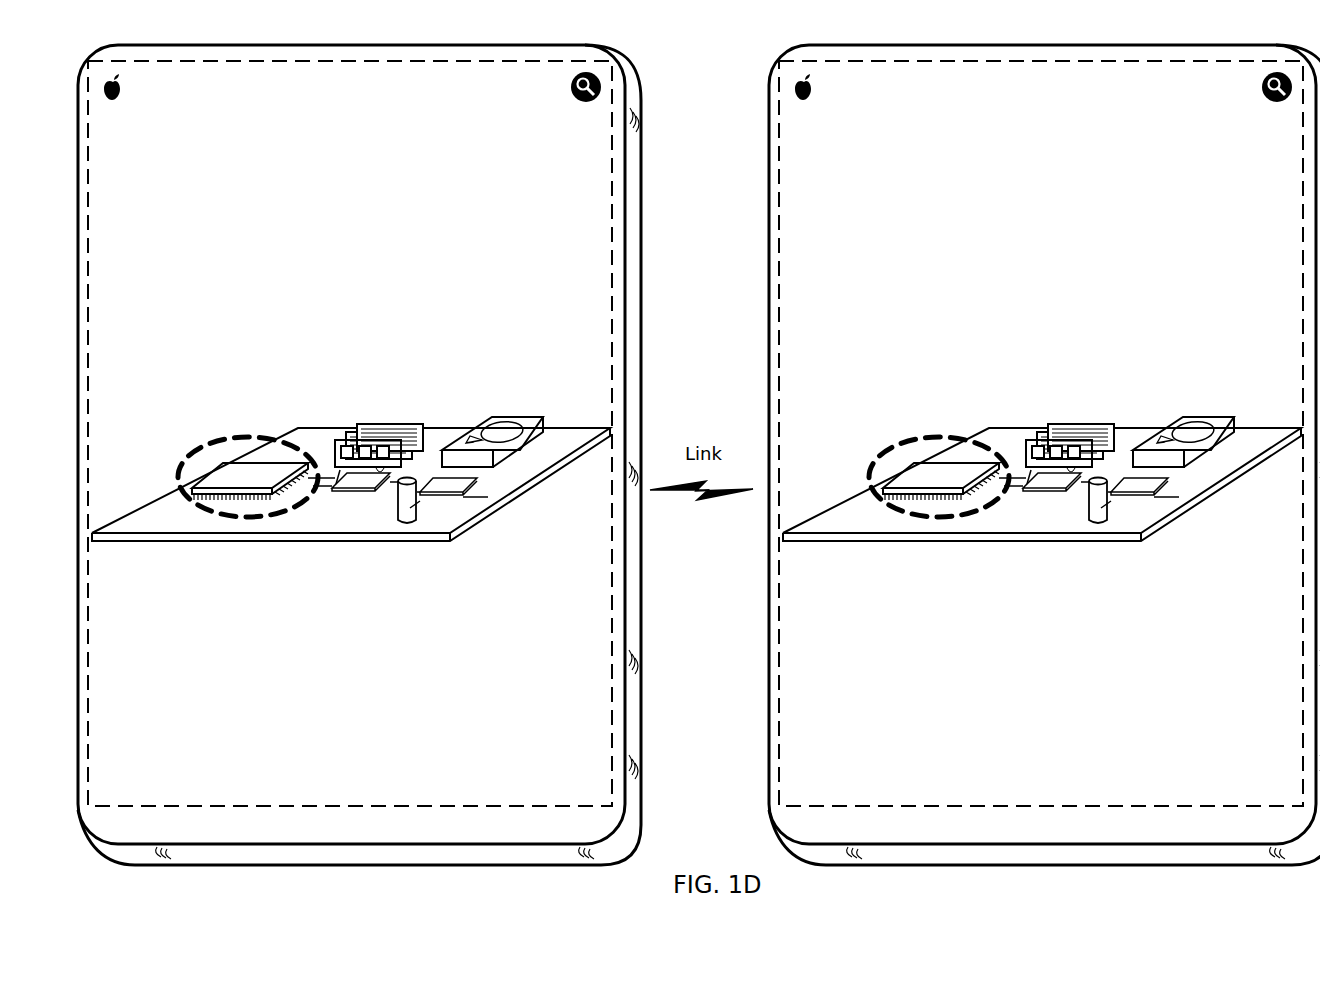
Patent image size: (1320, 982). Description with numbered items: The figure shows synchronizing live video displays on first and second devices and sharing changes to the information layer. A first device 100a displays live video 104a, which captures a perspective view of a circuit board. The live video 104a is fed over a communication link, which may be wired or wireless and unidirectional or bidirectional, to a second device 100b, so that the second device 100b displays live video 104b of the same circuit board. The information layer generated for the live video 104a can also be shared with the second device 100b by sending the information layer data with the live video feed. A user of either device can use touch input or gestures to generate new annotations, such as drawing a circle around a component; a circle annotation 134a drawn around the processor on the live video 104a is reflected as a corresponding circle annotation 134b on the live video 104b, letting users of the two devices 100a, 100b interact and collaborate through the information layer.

The first device 100a is at (637, 82).
The second device 100b is at (770, 121).
The live video 104a is at (490, 306).
The live video 104b is at (1181, 306).
The highlight annotation around component 134a is at (242, 438).
The highlight annotation around component 134b is at (930, 454).